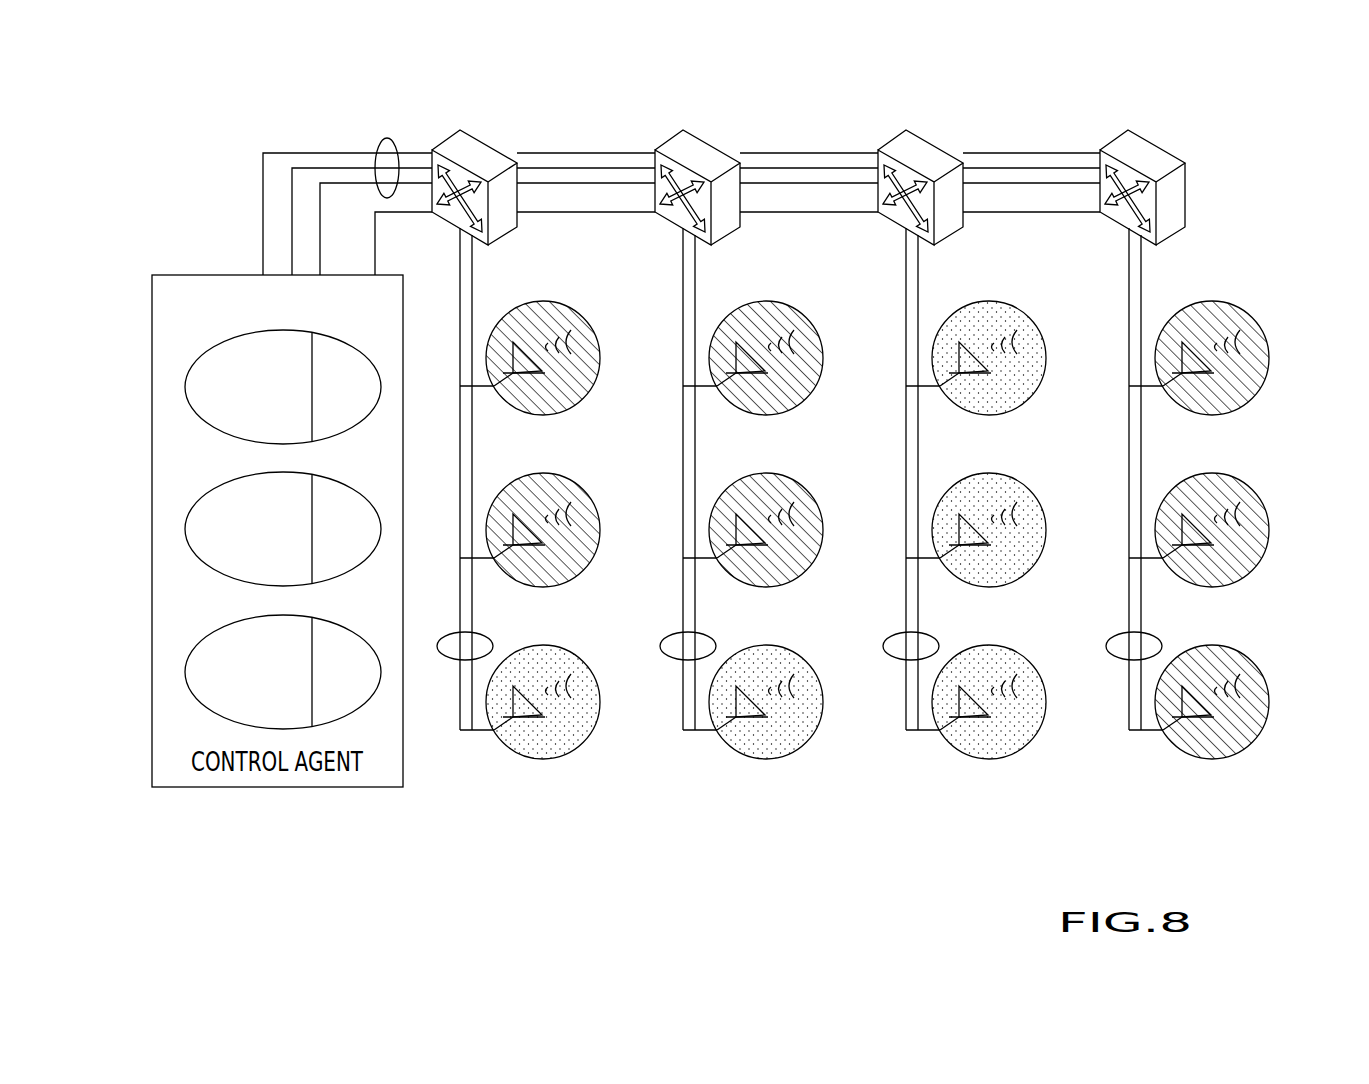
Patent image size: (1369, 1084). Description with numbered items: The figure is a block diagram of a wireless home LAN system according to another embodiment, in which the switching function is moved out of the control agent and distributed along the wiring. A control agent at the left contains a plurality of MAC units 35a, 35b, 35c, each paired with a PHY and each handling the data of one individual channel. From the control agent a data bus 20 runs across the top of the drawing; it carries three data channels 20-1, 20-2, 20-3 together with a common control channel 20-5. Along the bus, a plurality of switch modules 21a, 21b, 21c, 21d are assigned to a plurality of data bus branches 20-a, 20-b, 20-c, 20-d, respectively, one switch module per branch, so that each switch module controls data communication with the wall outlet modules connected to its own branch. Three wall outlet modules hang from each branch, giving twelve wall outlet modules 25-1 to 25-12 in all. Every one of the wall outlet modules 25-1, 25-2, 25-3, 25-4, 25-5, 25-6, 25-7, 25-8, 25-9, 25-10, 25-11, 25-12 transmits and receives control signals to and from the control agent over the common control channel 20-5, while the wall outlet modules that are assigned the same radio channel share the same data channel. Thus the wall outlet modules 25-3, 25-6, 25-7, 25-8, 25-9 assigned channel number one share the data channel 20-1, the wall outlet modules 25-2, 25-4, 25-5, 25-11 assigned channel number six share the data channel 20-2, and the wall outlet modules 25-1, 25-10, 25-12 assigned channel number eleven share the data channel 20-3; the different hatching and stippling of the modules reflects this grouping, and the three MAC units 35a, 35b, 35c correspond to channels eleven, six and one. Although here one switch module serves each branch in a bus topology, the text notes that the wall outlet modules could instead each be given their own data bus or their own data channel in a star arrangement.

The data bus 20 is at (387, 138).
The data channel 20-1 is at (348, 183).
The data channel 20-2 is at (292, 195).
The data channel 20-3 is at (263, 233).
The common control channel 20-5 is at (472, 286).
The data bus branch 20-a is at (447, 656).
The data bus branch 20-b is at (673, 657).
The data bus branch 20-c is at (900, 657).
The data bus branch 20-d is at (1123, 657).
The switch module 21a is at (477, 145).
The switch module 21b is at (700, 145).
The switch module 21c is at (922, 145).
The switch module 21d is at (1148, 145).
The wall outlet module 25-1 is at (572, 407).
The wall outlet module 25-2 is at (572, 579).
The wall outlet module 25-3 is at (585, 740).
The wall outlet module 25-4 is at (795, 407).
The wall outlet module 25-5 is at (795, 579).
The wall outlet module 25-6 is at (808, 740).
The wall outlet module 25-7 is at (1018, 407).
The wall outlet module 25-8 is at (1018, 579).
The wall outlet module 25-9 is at (1031, 740).
The wall outlet module 25-10 is at (1241, 407).
The wall outlet module 25-11 is at (1241, 579).
The wall outlet module 25-12 is at (1254, 740).
The MAC unit 35a is at (186, 390).
The MAC unit 35b is at (186, 532).
The MAC unit 35c is at (186, 675).